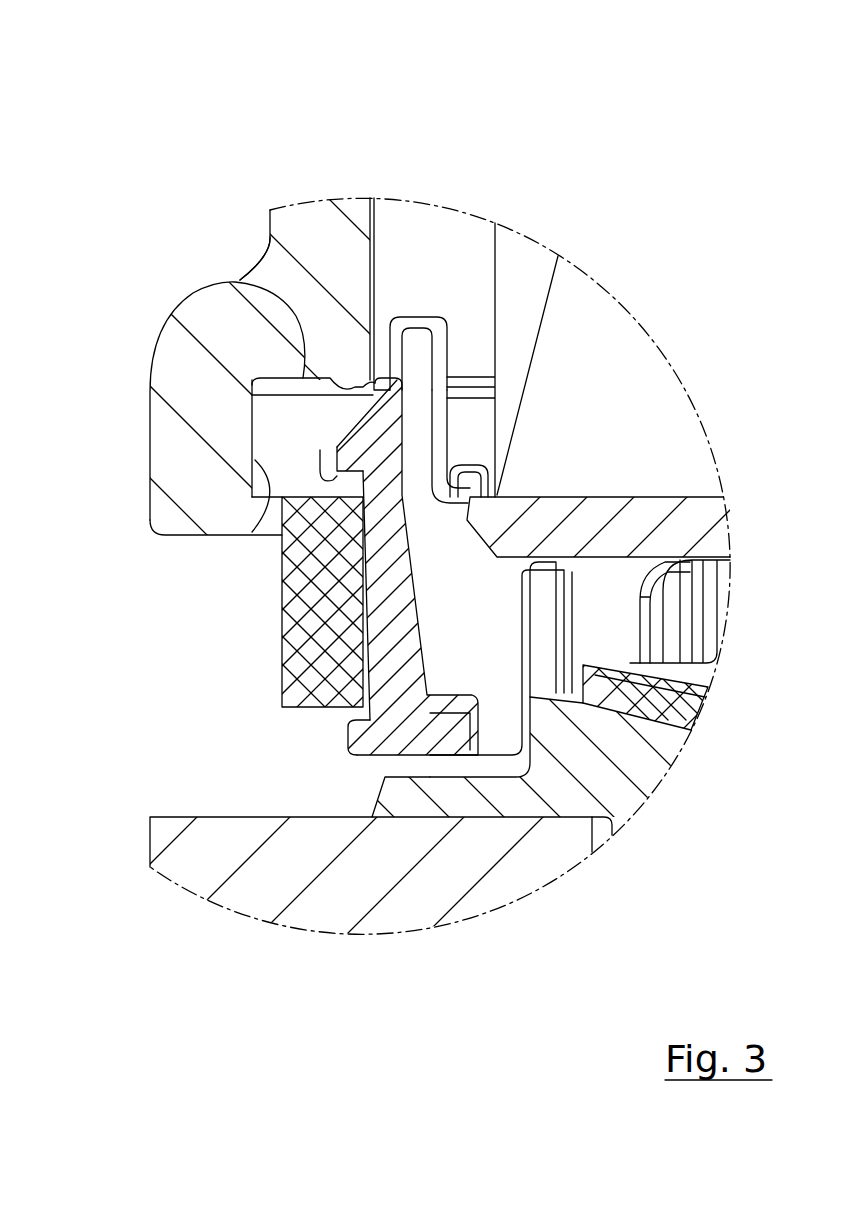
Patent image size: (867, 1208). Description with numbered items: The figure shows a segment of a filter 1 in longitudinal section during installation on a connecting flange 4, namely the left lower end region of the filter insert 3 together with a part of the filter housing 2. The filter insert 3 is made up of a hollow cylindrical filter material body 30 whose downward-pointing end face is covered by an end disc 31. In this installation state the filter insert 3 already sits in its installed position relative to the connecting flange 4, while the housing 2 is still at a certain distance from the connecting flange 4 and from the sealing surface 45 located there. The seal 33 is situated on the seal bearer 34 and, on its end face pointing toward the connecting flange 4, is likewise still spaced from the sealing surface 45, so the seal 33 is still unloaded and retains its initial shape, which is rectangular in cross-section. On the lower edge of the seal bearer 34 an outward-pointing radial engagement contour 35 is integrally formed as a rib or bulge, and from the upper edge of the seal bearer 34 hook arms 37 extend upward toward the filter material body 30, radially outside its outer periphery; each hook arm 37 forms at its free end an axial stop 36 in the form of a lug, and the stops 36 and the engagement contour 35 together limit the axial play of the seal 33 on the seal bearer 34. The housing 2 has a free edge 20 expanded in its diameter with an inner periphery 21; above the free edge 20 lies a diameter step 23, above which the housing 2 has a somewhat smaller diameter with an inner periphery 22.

The filter 1 is at (459, 100).
The filter housing 2 is at (303, 225).
The filter insert 3 is at (662, 337).
The connecting flange 4 is at (340, 900).
The free edge 20 is at (197, 497).
The inner periphery 21 is at (252, 532).
The inner periphery 22 is at (370, 280).
The diameter step 23 is at (247, 283).
The filter material body 30 is at (640, 395).
The end disc 31 is at (683, 528).
The seal 33 is at (303, 660).
The seal bearer 34 is at (393, 640).
The engagement contour 35 is at (347, 733).
The axial stop 36 is at (330, 480).
The hook arm 37 is at (382, 488).
The sealing surface 45 is at (317, 815).